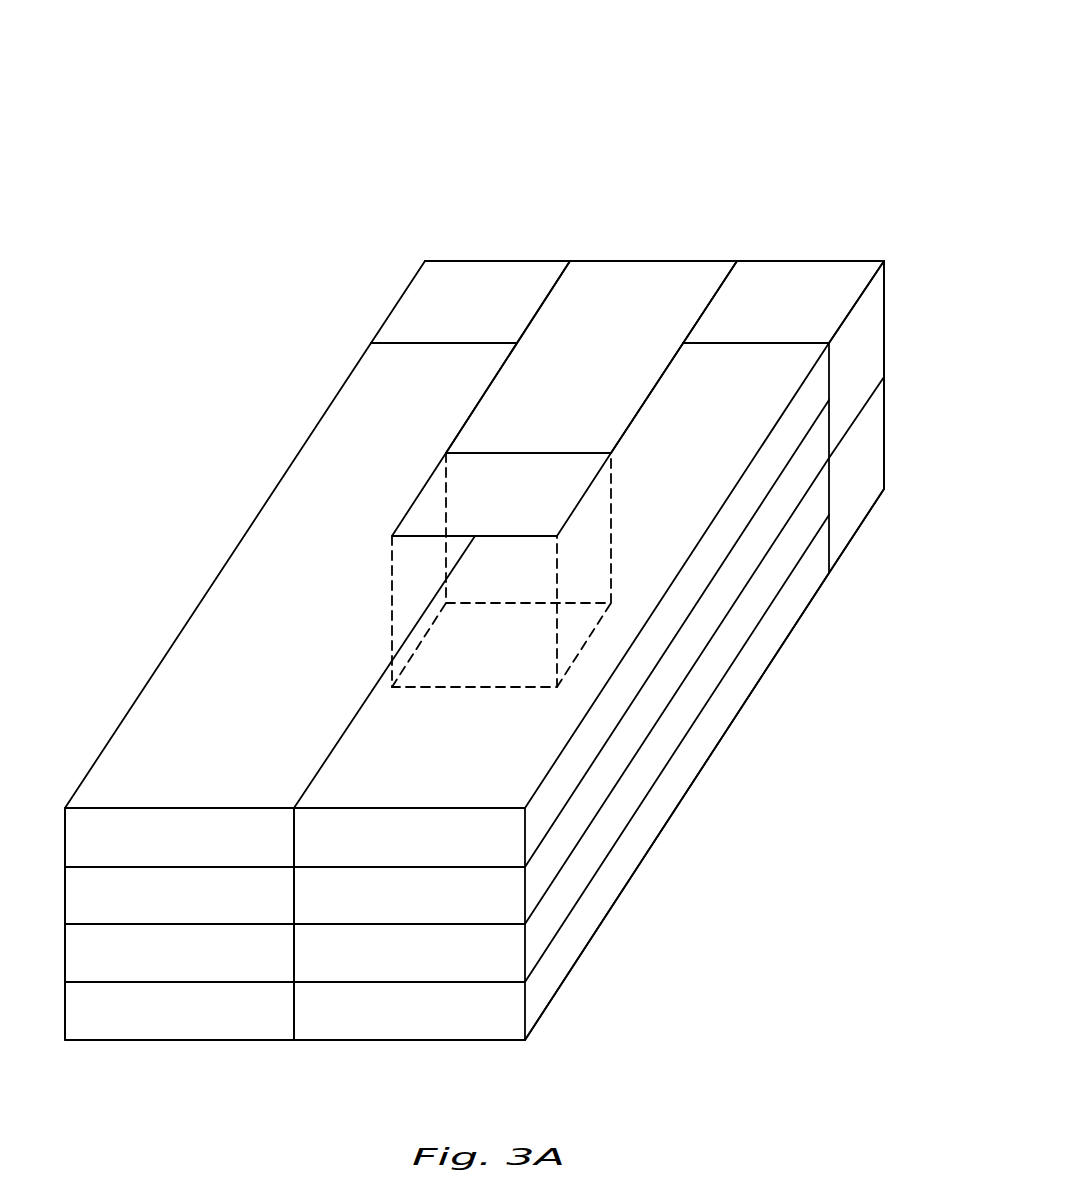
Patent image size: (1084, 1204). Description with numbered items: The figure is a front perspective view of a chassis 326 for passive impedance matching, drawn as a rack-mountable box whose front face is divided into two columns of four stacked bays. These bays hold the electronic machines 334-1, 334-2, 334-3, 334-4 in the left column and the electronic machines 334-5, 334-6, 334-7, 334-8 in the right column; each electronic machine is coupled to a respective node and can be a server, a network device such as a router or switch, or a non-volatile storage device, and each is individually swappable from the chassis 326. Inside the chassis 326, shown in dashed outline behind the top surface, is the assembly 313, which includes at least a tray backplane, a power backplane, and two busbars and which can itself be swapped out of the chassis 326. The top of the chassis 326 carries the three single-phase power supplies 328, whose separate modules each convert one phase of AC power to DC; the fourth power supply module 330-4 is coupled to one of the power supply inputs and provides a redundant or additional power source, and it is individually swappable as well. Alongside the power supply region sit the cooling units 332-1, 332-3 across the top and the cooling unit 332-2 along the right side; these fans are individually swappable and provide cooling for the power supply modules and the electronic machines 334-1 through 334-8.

The chassis 326 is at (360, 102).
The three single-phase power supplies 328 is at (682, 208).
The assembly 313 is at (391, 600).
The fourth power supply module 330-4 is at (646, 264).
The cooling unit 332-1 is at (805, 264).
The cooling unit 332-2 is at (884, 437).
The cooling unit 332-3 is at (493, 264).
The electronic machine 334-1 is at (179, 837).
The electronic machine 334-2 is at (179, 895).
The electronic machine 334-3 is at (179, 953).
The electronic machine 334-4 is at (179, 1011).
The electronic machine 334-5 is at (561, 605).
The electronic machine 334-6 is at (561, 691).
The electronic machine 334-7 is at (561, 748).
The electronic machine 334-8 is at (561, 806).